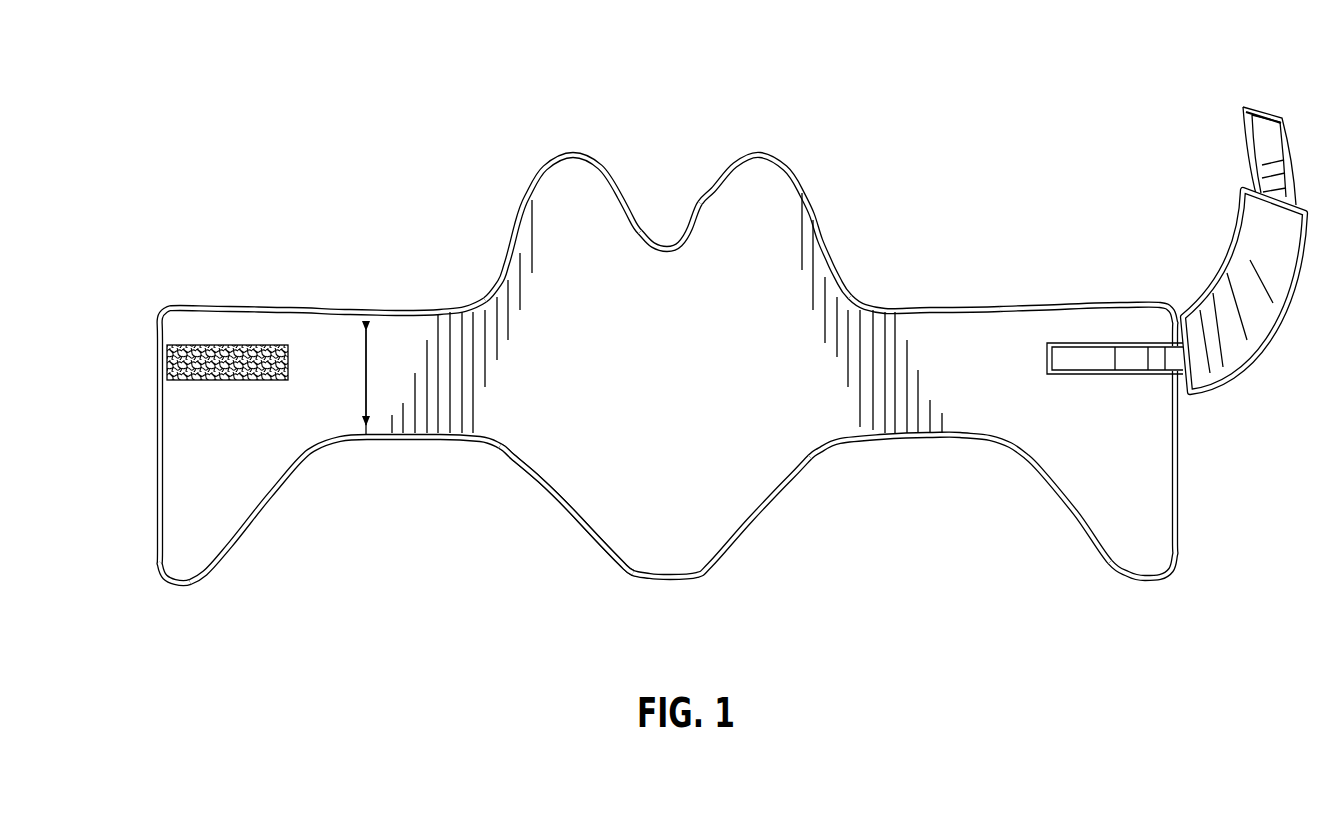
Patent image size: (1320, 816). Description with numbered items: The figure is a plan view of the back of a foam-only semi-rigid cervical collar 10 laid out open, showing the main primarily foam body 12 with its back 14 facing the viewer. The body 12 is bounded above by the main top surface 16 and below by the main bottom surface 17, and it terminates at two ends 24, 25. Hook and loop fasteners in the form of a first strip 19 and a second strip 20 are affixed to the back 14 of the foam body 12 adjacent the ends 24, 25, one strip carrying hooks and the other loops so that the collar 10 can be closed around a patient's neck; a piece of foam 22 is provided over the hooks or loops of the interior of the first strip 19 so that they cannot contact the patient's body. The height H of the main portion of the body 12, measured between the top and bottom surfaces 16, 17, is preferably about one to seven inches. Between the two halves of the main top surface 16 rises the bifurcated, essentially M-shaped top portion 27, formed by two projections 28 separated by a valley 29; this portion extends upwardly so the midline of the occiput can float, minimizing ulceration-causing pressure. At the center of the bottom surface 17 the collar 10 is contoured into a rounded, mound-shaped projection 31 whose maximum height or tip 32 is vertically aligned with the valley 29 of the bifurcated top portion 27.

The semi-rigid cervical collar 10 is at (1024, 220).
The foam body 12 is at (995, 330).
The back 14 is at (689, 414).
The main top surface 16 is at (336, 312).
The main bottom surface 17 is at (417, 441).
The first strip 19 is at (1255, 105).
The second strip 20 is at (217, 347).
The piece of foam 22 is at (1250, 262).
The end 24 is at (158, 470).
The end 25 is at (1178, 492).
The bifurcated top portion 27 is at (670, 64).
The projection 28 is at (573, 165).
The valley 29 is at (666, 214).
The projection 31 is at (666, 549).
The tip 32 is at (690, 578).
The height H is at (365, 371).